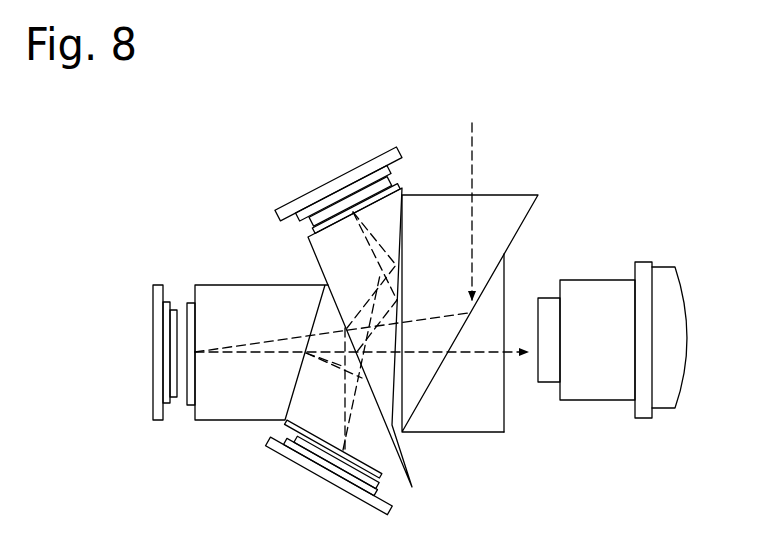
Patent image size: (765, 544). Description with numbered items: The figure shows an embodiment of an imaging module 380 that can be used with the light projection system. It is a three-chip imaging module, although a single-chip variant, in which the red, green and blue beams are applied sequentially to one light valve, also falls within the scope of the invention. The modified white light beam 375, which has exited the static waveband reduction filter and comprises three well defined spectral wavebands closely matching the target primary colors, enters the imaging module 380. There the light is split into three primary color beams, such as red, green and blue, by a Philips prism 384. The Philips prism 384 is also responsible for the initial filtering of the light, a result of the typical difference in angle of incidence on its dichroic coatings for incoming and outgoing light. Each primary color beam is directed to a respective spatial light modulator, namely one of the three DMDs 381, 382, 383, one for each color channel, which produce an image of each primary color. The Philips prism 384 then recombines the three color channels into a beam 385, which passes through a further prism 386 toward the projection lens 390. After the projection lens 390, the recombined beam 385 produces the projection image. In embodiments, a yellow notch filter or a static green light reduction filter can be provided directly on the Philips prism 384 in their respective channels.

The modified white light beam 375 is at (484, 164).
The imaging module 380 is at (237, 181).
The DMD 381 is at (346, 174).
The DMD 382 is at (160, 352).
The DMD 383 is at (333, 470).
The Philips prism 384 is at (293, 279).
The beam 385 is at (516, 366).
The prism 386 is at (481, 444).
The projection lens 390 is at (664, 281).